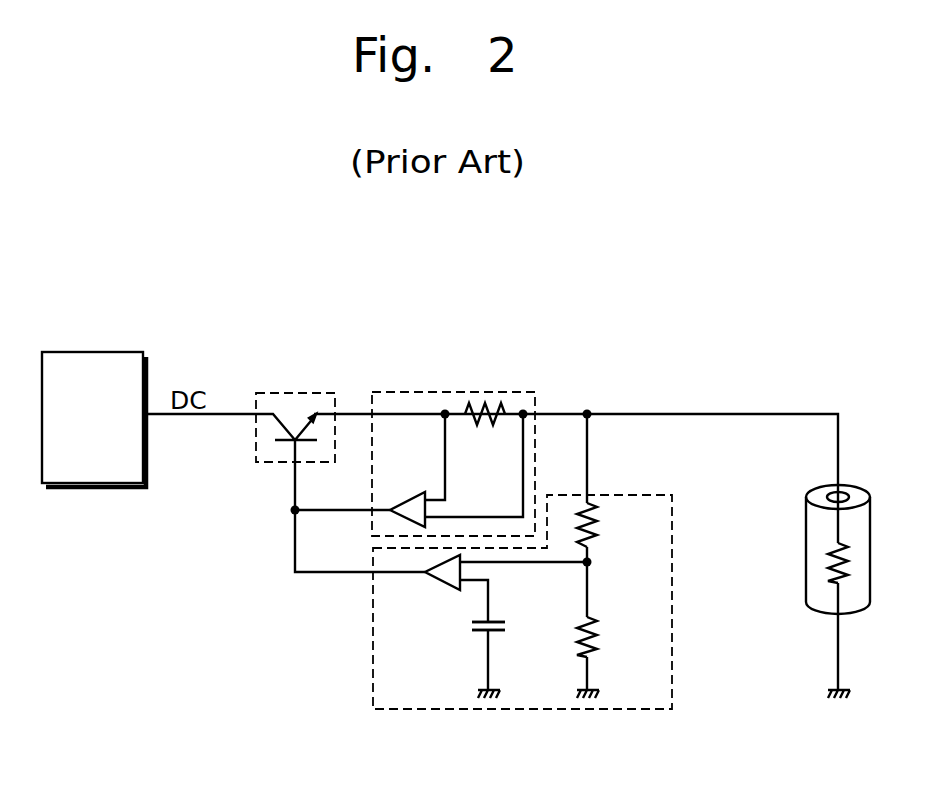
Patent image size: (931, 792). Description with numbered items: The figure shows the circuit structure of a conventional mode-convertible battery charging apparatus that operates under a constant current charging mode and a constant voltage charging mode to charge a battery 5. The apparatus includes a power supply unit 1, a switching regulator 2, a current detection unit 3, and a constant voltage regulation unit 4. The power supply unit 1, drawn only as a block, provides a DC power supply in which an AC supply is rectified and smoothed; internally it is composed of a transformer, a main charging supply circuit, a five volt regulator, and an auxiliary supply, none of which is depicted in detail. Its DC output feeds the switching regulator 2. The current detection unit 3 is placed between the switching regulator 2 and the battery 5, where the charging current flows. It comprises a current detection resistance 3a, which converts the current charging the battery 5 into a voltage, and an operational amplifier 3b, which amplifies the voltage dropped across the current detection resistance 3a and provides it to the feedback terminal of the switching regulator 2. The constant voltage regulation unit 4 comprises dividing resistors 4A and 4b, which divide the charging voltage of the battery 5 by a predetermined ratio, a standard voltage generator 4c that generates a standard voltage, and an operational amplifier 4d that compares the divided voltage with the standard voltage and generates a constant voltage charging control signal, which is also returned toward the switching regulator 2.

The power supply unit 1 is at (108, 352).
The switching regulator 2 is at (303, 393).
The current detection unit 3 is at (472, 392).
The current detection resistance 3a is at (483, 425).
The operational amplifier 3b is at (414, 492).
The constant voltage regulation unit 4 is at (673, 624).
The dividing resistor 4A is at (597, 526).
The dividing resistor 4b is at (597, 639).
The standard voltage generator 4c is at (505, 626).
The operational amplifier 4d is at (441, 586).
The battery 5 is at (806, 536).